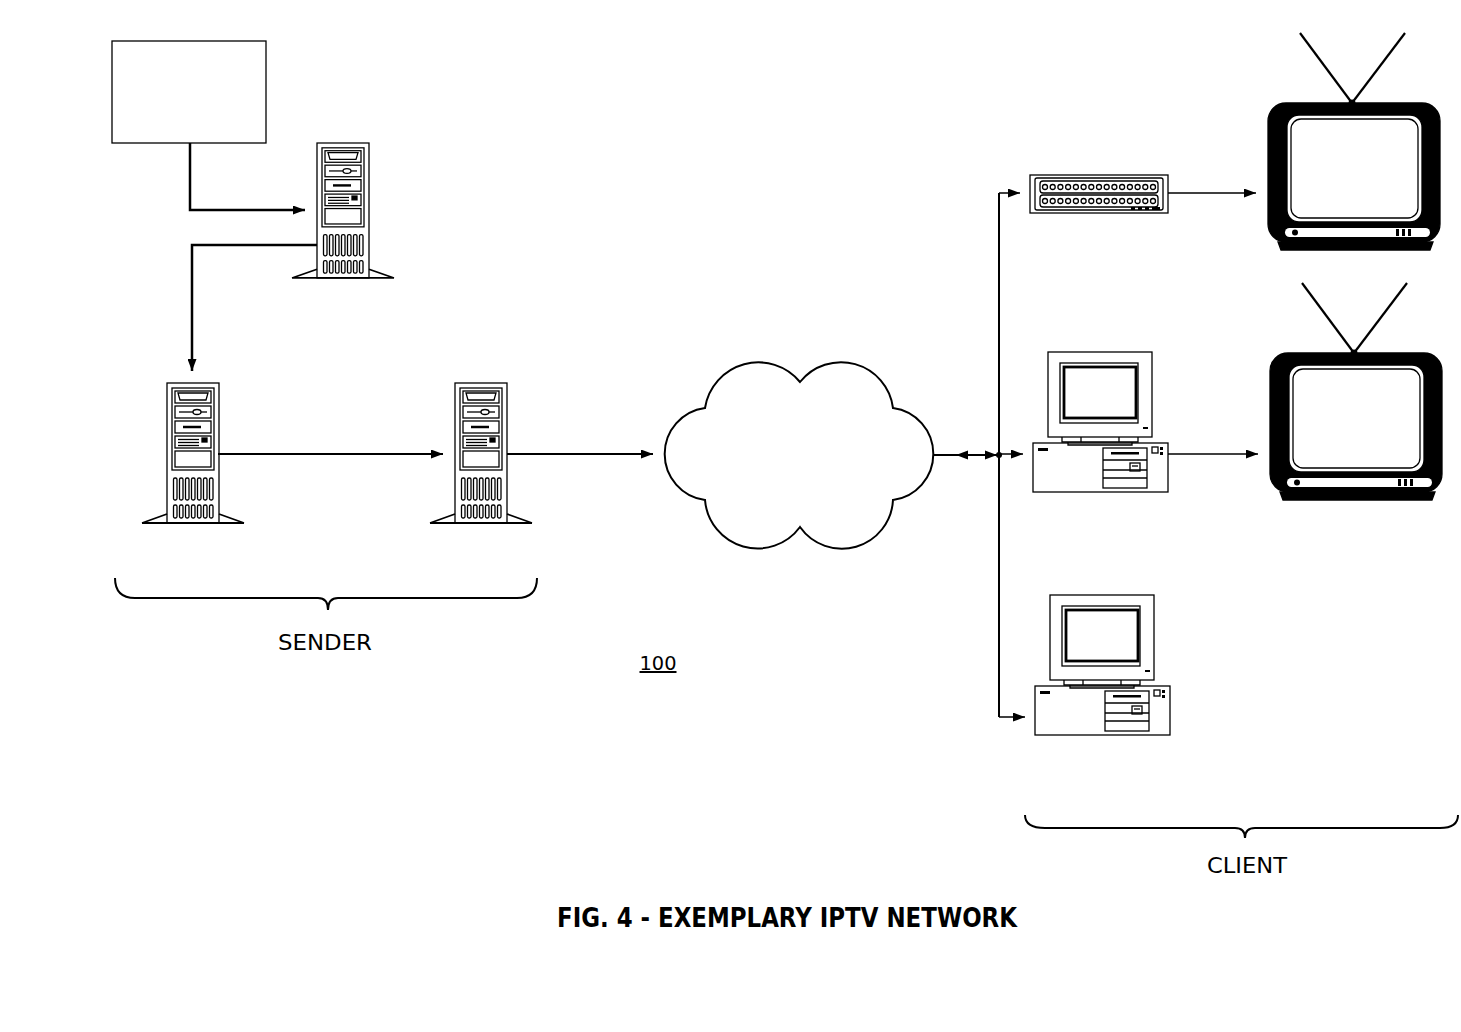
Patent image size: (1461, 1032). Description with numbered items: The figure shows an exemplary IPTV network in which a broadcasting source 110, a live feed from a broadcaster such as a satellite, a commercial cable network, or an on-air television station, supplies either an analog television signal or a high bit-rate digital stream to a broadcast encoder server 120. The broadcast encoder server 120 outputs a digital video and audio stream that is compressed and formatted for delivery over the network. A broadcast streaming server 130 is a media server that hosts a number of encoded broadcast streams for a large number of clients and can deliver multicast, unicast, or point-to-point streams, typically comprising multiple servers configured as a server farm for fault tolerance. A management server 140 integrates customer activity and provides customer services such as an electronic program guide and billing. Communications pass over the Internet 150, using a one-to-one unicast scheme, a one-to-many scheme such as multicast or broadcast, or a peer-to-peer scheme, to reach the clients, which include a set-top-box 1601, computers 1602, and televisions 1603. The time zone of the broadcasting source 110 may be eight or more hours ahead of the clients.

The broadcasting source 110 is at (266, 58).
The broadcast encoder server 120 is at (370, 165).
The broadcast streaming server 130 is at (218, 398).
The management server 140 is at (507, 395).
The Internet 150 is at (857, 365).
The set-top-box 1601 is at (1040, 172).
The computers 1602 is at (1154, 494).
The televisions 1603 is at (1270, 378).